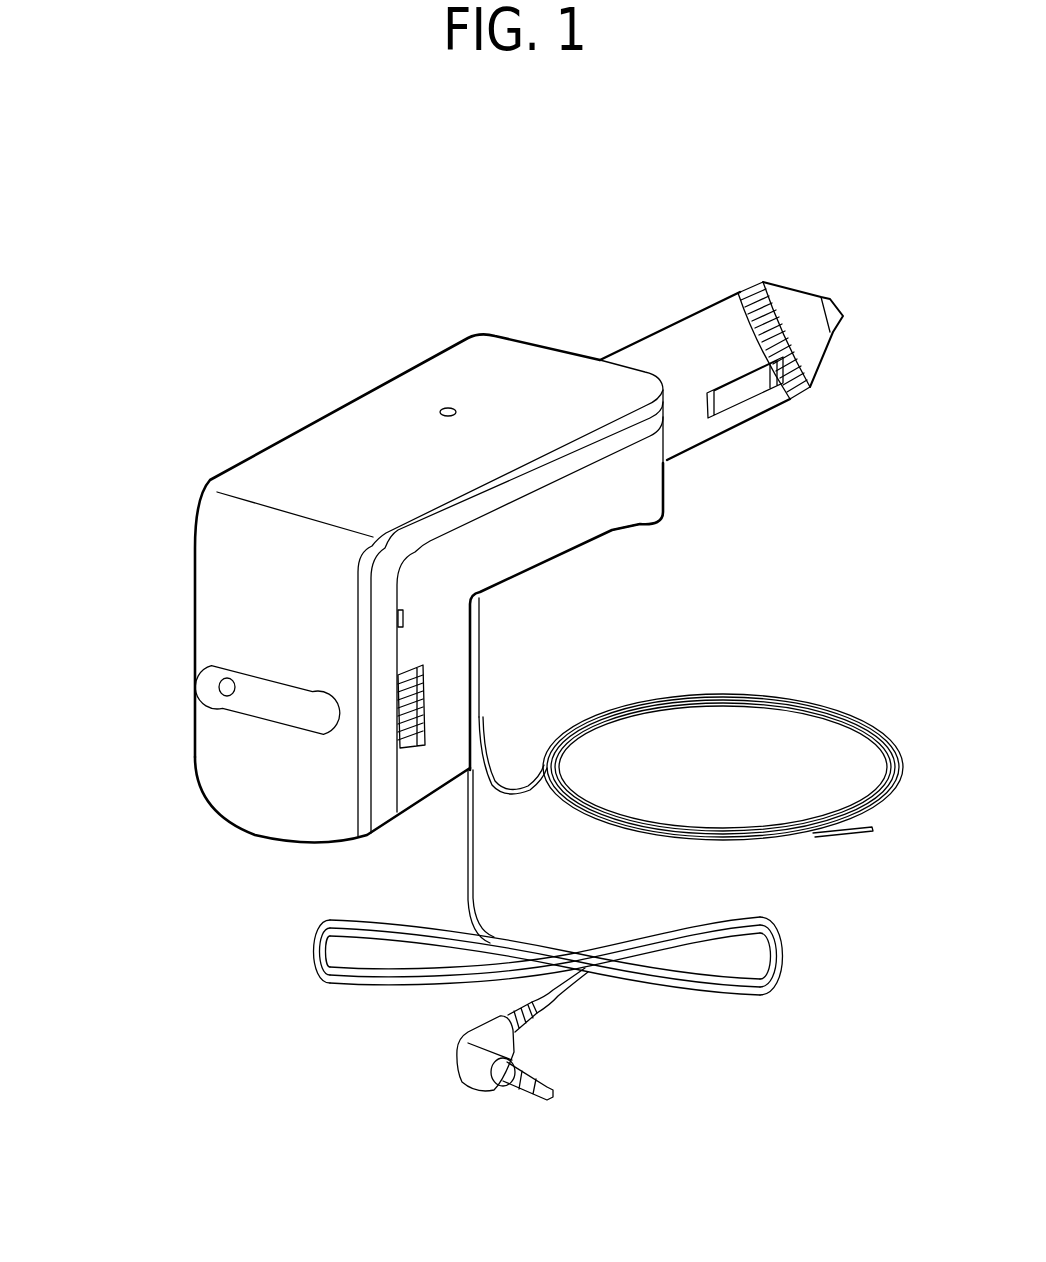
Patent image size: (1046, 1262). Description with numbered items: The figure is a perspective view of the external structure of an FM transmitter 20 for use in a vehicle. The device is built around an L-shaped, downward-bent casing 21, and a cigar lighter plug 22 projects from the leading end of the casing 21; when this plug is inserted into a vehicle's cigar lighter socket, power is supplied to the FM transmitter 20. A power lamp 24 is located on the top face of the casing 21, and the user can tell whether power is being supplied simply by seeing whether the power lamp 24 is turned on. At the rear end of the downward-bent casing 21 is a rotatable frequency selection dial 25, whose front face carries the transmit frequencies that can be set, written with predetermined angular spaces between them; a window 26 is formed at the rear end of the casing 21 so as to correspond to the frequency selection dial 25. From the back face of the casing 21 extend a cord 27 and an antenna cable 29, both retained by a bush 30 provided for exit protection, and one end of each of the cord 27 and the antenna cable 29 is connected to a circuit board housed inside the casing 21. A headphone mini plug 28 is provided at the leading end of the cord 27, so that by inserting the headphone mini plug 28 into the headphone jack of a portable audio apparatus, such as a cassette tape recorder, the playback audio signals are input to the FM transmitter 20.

The FM transmitter 20 is at (964, 1015).
The casing 21 is at (297, 433).
The cigar lighter plug 22 is at (710, 325).
The power lamp 24 is at (448, 408).
The frequency selection dial 25 is at (407, 748).
The window 26 is at (216, 694).
The cord 27 is at (753, 987).
The headphone mini plug 28 is at (463, 1074).
The antenna cable 29 is at (793, 698).
The bush 30 is at (480, 647).